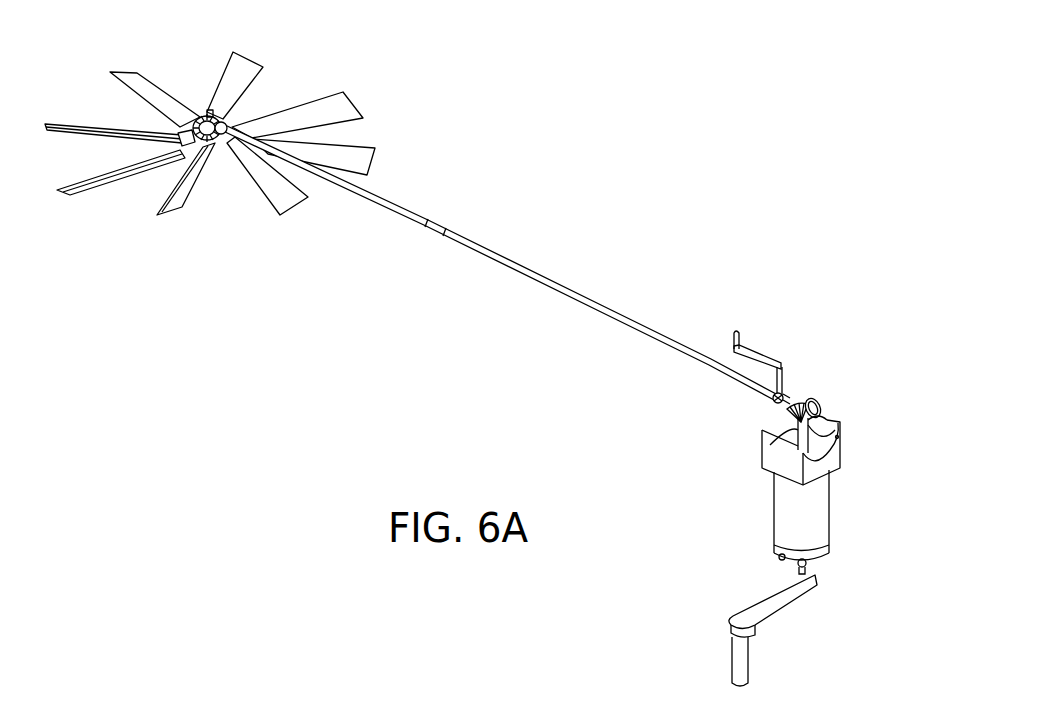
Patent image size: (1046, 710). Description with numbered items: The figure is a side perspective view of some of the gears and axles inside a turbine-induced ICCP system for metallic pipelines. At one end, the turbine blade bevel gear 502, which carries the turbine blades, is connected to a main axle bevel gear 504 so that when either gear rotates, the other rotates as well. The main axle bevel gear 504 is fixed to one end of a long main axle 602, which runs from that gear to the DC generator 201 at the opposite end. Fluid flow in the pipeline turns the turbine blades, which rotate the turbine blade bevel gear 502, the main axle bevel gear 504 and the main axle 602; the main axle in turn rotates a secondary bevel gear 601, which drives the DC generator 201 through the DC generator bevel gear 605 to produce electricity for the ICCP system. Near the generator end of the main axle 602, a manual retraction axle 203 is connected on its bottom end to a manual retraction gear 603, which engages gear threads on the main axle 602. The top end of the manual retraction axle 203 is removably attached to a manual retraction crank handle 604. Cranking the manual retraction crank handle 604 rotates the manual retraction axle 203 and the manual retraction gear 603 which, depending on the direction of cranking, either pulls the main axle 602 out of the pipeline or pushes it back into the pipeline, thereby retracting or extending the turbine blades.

The turbine blade bevel gear 502 is at (200, 117).
The main axle bevel gear 504 is at (230, 118).
The main axle 602 is at (603, 302).
The manual retraction crank handle 604 is at (765, 351).
The manual retraction axle 203 is at (786, 397).
The manual retraction gear 603 is at (773, 400).
The secondary bevel gear 601 is at (818, 402).
The DC generator bevel gear 605 is at (788, 411).
The DC generator 201 is at (822, 530).